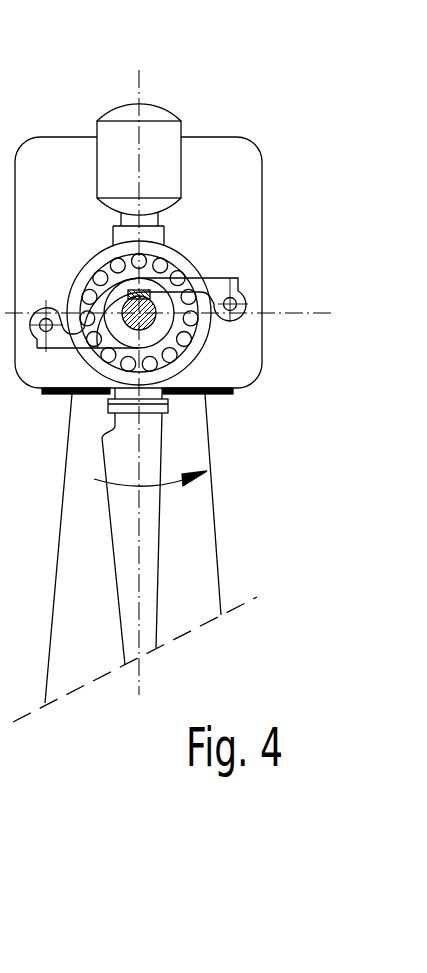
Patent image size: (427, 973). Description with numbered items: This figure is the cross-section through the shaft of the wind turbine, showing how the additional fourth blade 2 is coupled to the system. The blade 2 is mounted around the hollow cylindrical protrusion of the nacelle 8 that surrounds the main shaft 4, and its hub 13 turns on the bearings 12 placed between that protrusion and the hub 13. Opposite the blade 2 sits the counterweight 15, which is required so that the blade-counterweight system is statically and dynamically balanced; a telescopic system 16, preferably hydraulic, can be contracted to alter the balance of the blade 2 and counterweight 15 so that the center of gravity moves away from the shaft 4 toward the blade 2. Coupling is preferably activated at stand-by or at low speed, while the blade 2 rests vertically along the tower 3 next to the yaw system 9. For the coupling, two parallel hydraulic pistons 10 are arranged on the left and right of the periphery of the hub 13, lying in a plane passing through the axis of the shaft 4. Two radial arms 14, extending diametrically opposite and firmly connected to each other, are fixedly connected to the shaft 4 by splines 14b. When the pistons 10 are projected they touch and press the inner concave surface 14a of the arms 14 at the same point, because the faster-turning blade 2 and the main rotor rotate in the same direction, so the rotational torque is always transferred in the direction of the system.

The additional fourth blade 2 is at (168, 524).
The tower 3 is at (222, 560).
The shaft 4 is at (206, 310).
The nacelle 8 is at (210, 135).
The yaw system 9 is at (207, 393).
The hydraulic pistons 10 is at (248, 311).
The bearings 12 is at (205, 395).
The hub 13 is at (180, 249).
The radial arms 14 is at (236, 278).
The inner concave surface 14a is at (238, 314).
The splines 14b is at (148, 293).
The counterweight 15 is at (173, 115).
The telescopic system 16 is at (157, 218).